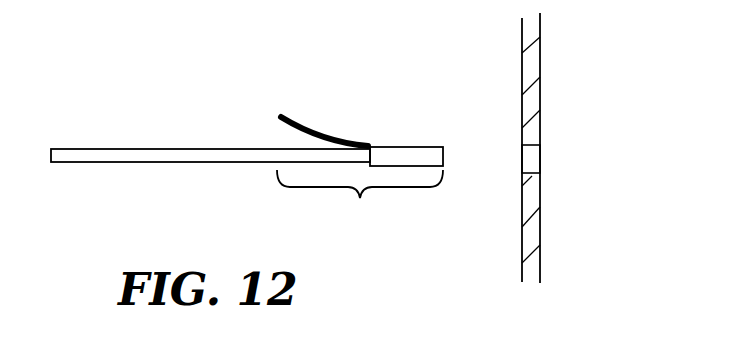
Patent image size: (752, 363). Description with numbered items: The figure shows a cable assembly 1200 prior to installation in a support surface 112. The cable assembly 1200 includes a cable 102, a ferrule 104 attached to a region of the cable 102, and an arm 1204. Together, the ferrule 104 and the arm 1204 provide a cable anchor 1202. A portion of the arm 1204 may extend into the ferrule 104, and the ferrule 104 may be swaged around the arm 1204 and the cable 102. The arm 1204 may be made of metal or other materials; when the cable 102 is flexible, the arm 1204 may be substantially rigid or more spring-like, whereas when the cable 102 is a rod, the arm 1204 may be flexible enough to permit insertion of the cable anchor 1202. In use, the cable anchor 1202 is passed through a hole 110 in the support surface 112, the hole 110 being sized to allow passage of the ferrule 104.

The cable 102 is at (106, 149).
The ferrule 104 is at (412, 146).
The hole 110 is at (540, 165).
The support surface 112 is at (521, 72).
The cable assembly 1200 is at (141, 193).
The cable anchor 1202 is at (360, 199).
The arm 1204 is at (300, 130).